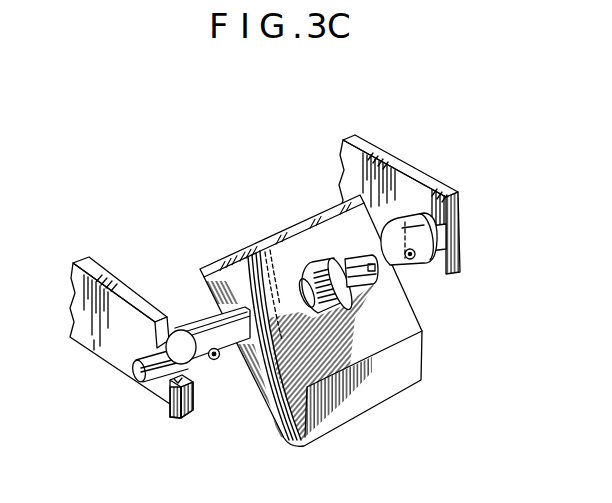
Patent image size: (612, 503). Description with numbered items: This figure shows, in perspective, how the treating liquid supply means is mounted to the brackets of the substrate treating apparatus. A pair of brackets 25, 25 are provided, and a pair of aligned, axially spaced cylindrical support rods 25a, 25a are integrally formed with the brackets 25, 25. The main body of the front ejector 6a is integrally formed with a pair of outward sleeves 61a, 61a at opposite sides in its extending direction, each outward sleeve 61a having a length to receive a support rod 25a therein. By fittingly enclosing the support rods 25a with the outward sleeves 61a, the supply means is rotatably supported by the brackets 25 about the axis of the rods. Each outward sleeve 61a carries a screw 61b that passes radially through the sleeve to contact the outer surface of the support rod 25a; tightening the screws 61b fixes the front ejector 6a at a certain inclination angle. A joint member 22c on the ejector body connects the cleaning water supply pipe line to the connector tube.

The bracket 25 is at (364, 142).
The support rod 25a is at (428, 220).
The outward sleeve 61a is at (396, 218).
The screw 61b is at (413, 259).
The joint member 22c is at (323, 256).
The front ejector 6a is at (436, 382).